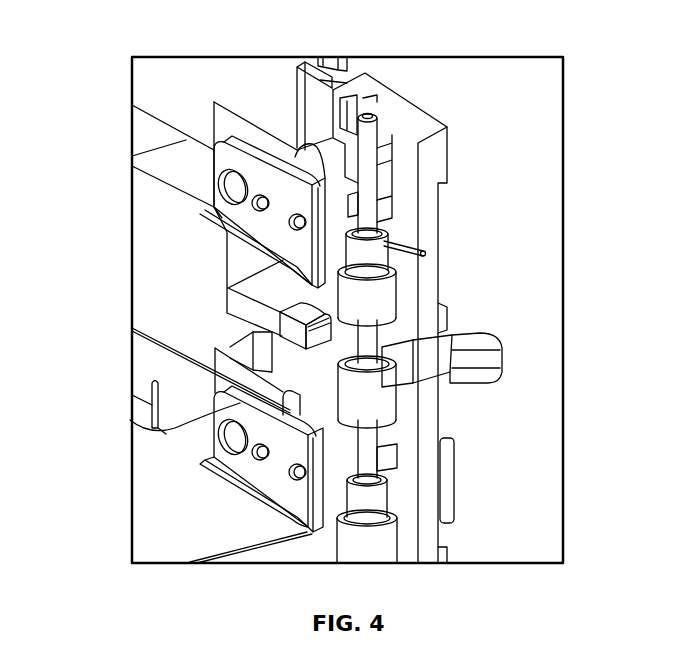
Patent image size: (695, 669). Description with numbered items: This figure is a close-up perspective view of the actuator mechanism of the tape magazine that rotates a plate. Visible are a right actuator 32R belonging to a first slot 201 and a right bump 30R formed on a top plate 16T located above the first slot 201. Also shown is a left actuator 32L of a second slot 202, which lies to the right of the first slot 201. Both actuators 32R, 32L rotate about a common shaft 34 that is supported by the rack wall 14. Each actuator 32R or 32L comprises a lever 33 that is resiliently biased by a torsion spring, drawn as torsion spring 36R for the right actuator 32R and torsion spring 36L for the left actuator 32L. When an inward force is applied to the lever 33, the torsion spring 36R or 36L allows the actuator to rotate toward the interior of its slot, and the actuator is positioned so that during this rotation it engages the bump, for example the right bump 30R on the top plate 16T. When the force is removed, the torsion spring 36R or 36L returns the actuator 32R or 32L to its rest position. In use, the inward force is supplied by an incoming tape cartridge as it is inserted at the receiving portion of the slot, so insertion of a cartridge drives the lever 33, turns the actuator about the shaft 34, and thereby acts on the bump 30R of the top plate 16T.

The rack wall 14 is at (370, 85).
The top plate 16T is at (148, 216).
The right bump 30R is at (293, 268).
The right actuator 32R is at (280, 312).
The left actuator 32L is at (475, 342).
The lever 33 is at (255, 360).
The shaft 34 is at (370, 140).
The torsion spring 36R is at (425, 254).
The torsion spring 36L is at (396, 428).
The first slot 201 is at (250, 402).
The second slot 202 is at (440, 290).